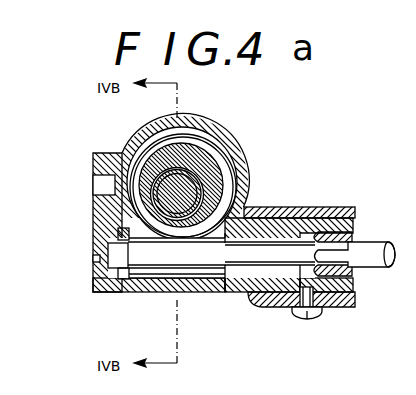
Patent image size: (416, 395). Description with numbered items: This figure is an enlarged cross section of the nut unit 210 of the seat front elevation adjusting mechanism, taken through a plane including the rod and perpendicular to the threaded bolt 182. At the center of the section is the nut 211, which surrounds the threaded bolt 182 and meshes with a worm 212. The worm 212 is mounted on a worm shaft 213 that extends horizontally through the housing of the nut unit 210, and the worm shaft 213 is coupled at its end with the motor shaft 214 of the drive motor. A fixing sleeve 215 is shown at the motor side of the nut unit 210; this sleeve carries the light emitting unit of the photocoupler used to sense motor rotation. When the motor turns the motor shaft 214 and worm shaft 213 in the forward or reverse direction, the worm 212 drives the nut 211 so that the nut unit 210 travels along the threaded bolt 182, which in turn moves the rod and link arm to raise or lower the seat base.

The nut unit 210 is at (266, 194).
The nut 211 is at (190, 152).
The threaded bolt 182 is at (203, 166).
The worm 212 is at (187, 293).
The worm shaft 213 is at (263, 298).
The motor shaft 214 is at (378, 268).
The fixing sleeve 215 is at (318, 207).